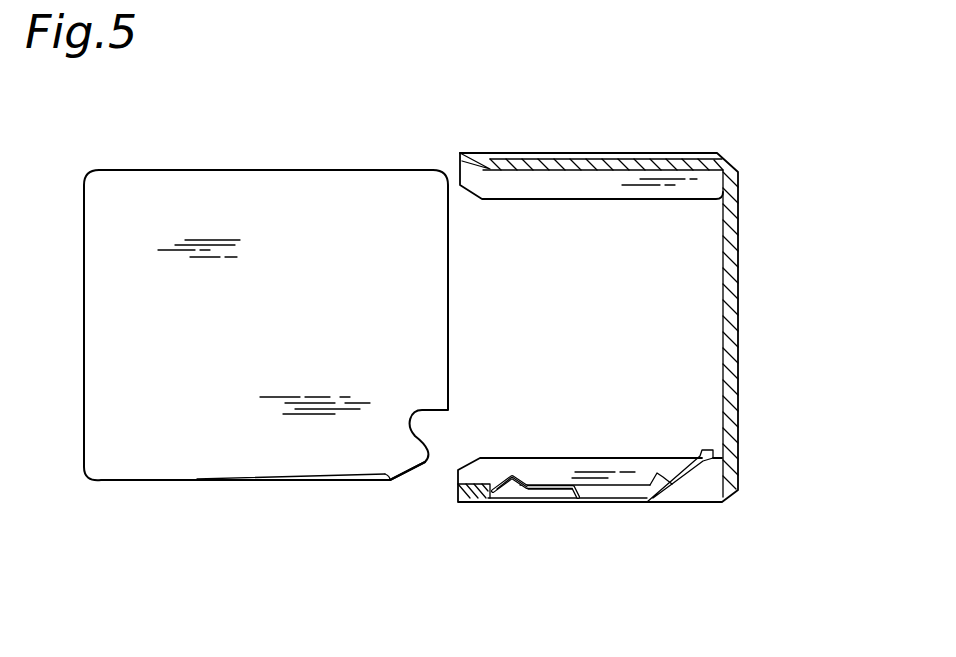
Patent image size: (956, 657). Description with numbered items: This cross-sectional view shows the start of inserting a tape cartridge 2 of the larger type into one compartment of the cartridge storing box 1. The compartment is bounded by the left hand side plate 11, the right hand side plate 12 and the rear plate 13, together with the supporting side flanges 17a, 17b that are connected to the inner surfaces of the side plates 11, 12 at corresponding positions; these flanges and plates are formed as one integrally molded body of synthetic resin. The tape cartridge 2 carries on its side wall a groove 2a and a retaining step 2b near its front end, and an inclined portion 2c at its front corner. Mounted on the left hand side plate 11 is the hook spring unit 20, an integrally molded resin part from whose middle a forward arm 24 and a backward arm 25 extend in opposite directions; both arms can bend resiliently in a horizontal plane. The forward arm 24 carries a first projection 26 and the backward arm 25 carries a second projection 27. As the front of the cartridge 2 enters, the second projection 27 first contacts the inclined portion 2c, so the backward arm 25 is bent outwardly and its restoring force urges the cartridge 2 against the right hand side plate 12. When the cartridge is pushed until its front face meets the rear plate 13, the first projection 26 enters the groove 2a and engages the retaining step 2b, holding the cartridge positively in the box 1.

The cartridge storing box 1 is at (739, 186).
The 3480 tape cartridge 2 is at (231, 170).
The groove 2a is at (363, 481).
The retaining step 2b is at (383, 481).
The inclined portion 2c is at (417, 463).
The left hand side plate 11 is at (472, 502).
The right hand side plate 12 is at (472, 160).
The rear plate 13 is at (727, 286).
The supporting side flange 17a is at (590, 467).
The supporting side flange 17b is at (583, 185).
The hook spring unit 20 is at (578, 504).
The forward arm 24 is at (685, 478).
The backward arm 25 is at (543, 495).
The first projection 26 is at (653, 480).
The second projection 27 is at (512, 475).